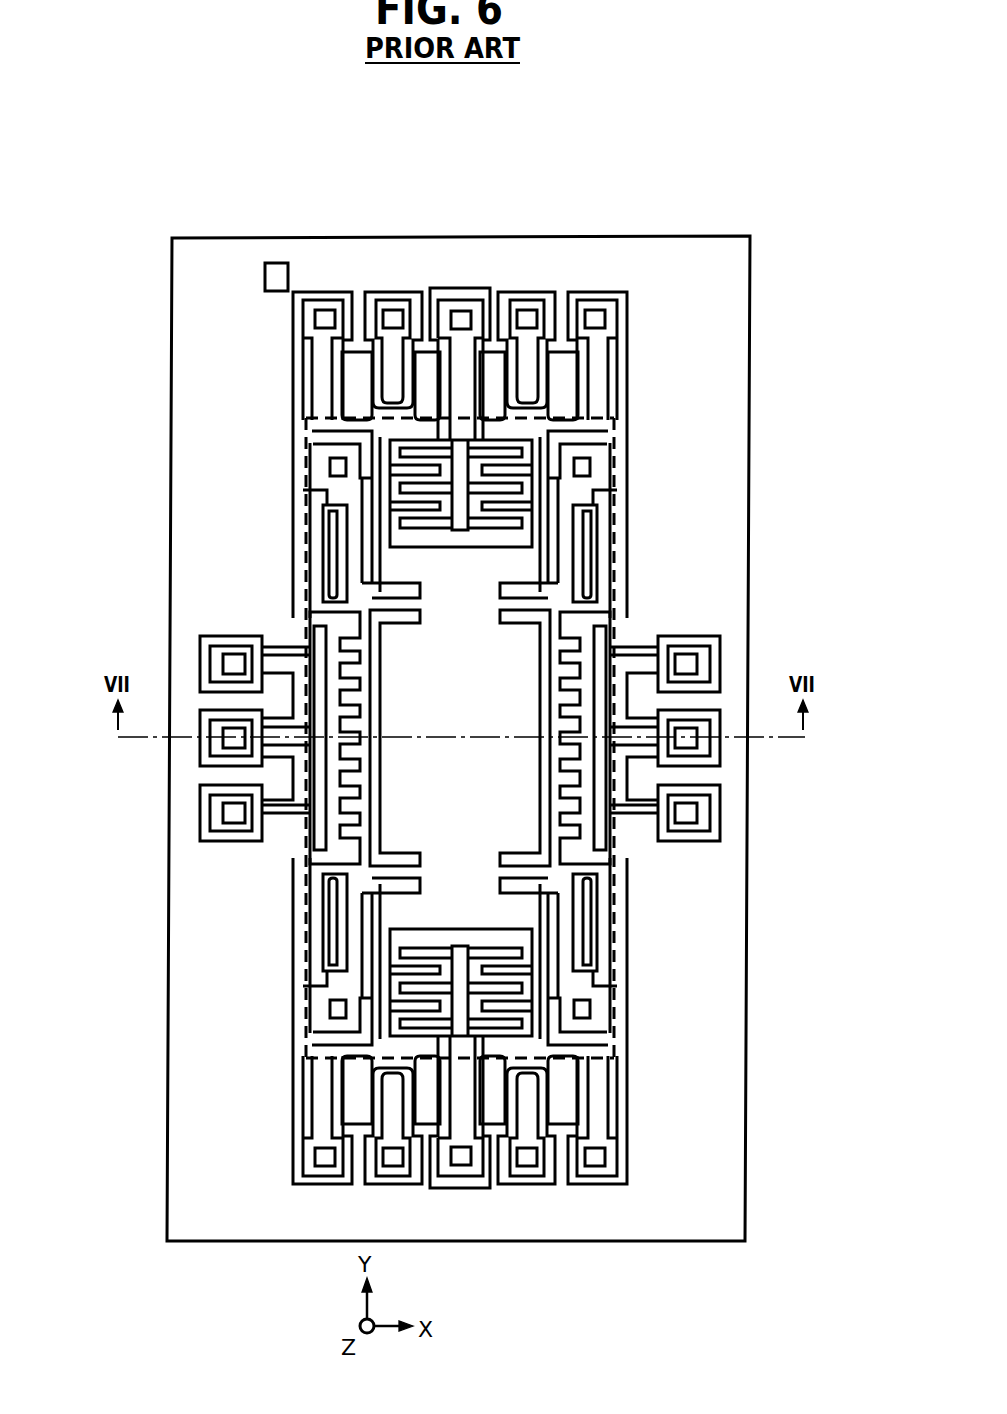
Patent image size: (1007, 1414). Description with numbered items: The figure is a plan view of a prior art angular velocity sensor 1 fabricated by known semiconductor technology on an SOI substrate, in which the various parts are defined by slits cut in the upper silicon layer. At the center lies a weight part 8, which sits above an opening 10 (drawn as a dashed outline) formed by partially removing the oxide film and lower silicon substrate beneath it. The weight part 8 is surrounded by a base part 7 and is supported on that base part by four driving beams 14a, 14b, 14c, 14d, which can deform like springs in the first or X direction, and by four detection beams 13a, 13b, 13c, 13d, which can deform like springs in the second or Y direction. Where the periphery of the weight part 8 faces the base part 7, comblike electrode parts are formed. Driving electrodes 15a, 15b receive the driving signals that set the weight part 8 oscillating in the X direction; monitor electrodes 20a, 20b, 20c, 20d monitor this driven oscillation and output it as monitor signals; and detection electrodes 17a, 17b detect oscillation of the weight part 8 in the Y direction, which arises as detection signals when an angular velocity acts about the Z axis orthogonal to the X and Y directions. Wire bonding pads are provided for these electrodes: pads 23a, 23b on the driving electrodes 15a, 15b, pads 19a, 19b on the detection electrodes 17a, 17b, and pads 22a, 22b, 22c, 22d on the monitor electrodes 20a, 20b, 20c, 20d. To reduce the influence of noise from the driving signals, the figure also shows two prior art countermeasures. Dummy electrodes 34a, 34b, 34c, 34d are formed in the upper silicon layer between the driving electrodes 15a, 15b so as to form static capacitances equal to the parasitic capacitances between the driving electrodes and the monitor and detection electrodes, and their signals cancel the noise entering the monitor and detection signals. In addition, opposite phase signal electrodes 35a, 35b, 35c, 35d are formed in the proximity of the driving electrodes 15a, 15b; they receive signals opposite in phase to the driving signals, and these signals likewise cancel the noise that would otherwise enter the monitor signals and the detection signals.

The angular velocity sensor 1 is at (412, 197).
The base part 7 is at (672, 265).
The weight part 8 is at (465, 702).
The opening 10 is at (612, 873).
The detection beam 13a is at (530, 605).
The detection beam 13b is at (390, 605).
The detection beam 13c is at (530, 871).
The detection beam 13d is at (390, 871).
The driving beam 14a is at (588, 535).
The driving beam 14b is at (332, 535).
The driving beam 14c is at (588, 941).
The driving beam 14d is at (332, 941).
The driving electrode 15a is at (602, 637).
The driving electrode 15b is at (318, 637).
The detection electrode 17a is at (548, 335).
The detection electrode 17b is at (548, 1140).
The pad 19a is at (460, 325).
The pad 19b is at (460, 1150).
The monitor electrode 20a is at (600, 368).
The monitor electrode 20b is at (320, 368).
The monitor electrode 20c is at (600, 1104).
The monitor electrode 20d is at (310, 1104).
The pad 22a is at (605, 317).
The pad 22b is at (315, 317).
The pad 22c is at (605, 1154).
The pad 22d is at (322, 1154).
The pad 23a is at (688, 740).
The pad 23b is at (232, 740).
The dummy electrode 34a is at (604, 322).
The dummy electrode 34b is at (388, 330).
The dummy electrode 34c is at (604, 1150).
The dummy electrode 34d is at (348, 1150).
The opposite phase signal electrode 35a is at (690, 650).
The opposite phase signal electrode 35b is at (230, 650).
The opposite phase signal electrode 35c is at (685, 825).
The opposite phase signal electrode 35d is at (235, 825).